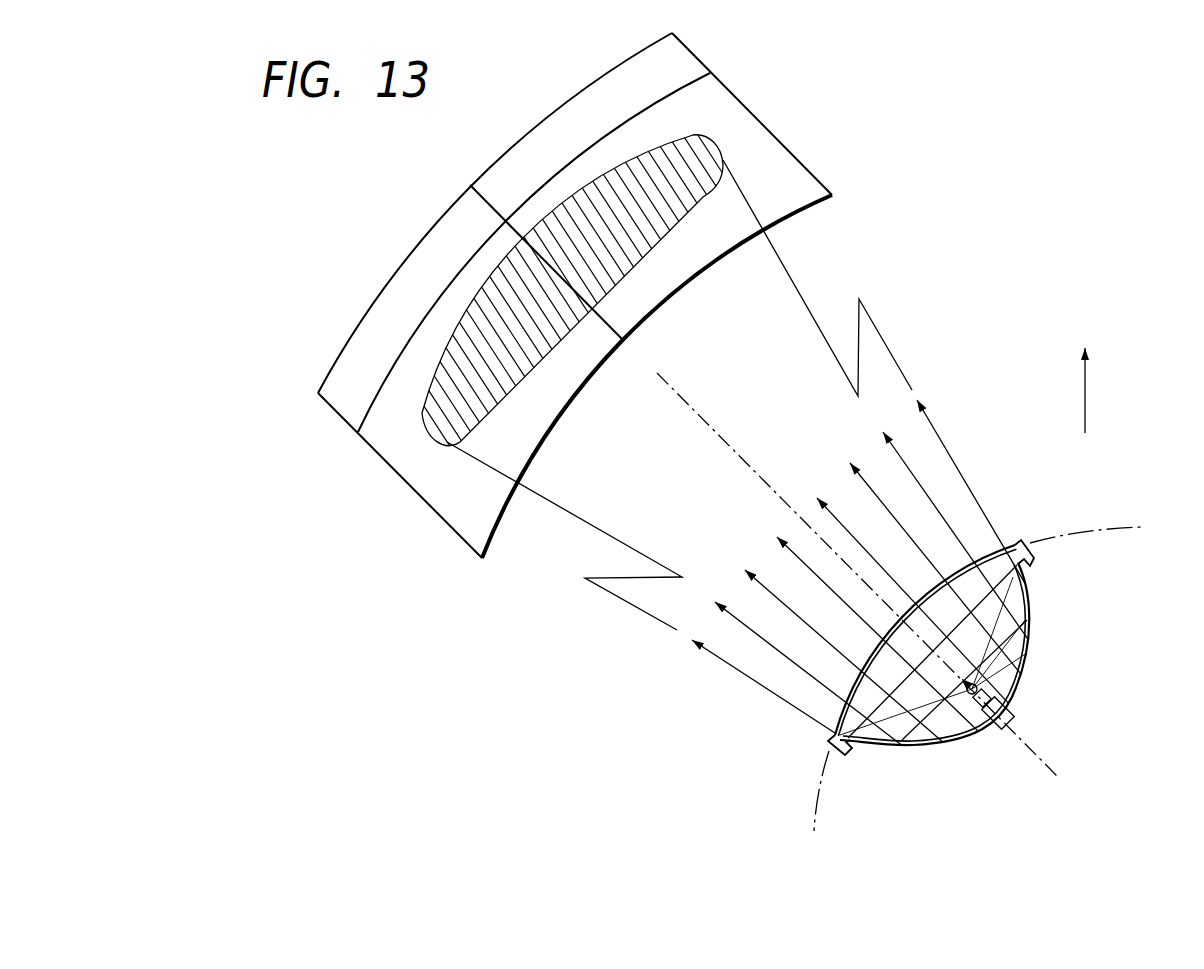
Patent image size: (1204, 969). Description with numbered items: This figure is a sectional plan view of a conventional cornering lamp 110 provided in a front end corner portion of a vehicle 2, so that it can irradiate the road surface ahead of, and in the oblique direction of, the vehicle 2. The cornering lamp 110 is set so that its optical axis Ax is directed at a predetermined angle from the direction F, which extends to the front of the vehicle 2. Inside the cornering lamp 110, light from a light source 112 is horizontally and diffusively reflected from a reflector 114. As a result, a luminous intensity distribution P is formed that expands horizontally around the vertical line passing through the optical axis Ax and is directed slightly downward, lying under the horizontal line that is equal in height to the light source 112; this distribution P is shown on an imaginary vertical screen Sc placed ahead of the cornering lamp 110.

The vehicle 2 is at (1120, 508).
The cornering lamp 110 is at (806, 703).
The light source 112 is at (965, 690).
The reflector 114 is at (1030, 645).
The optical axis Ax is at (1027, 743).
The direction extending to the front of the vehicle F is at (1085, 376).
The imaginary vertical screen Sc is at (780, 165).
The luminous intensity distribution P is at (487, 268).